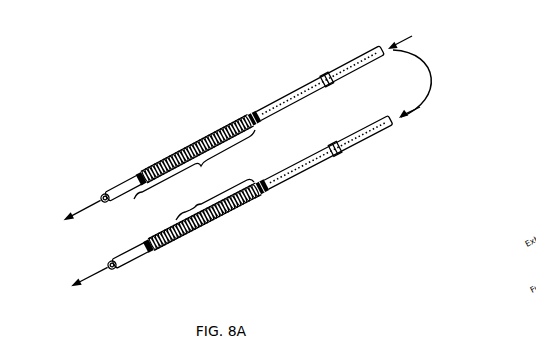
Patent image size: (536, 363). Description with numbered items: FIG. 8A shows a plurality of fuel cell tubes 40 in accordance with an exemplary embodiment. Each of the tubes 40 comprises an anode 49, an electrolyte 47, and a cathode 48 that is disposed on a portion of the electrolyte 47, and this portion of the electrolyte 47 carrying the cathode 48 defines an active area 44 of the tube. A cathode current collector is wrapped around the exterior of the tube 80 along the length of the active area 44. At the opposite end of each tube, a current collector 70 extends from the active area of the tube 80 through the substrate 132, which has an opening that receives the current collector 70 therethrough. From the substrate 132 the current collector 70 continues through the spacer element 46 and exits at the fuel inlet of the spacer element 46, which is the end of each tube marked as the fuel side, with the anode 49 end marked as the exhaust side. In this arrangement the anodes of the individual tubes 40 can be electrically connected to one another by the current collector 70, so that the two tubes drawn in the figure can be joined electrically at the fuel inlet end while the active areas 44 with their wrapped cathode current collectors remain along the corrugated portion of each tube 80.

The tubes 40 is at (266, 50).
The active area 44 is at (194, 175).
The spacer element 46 is at (357, 58).
The electrolyte 47 is at (99, 196).
The cathode 48 is at (113, 186).
The anode 49 is at (97, 209).
The current collector 70 is at (337, 72).
The tube 80 is at (140, 178).
The substrate 132 is at (318, 80).